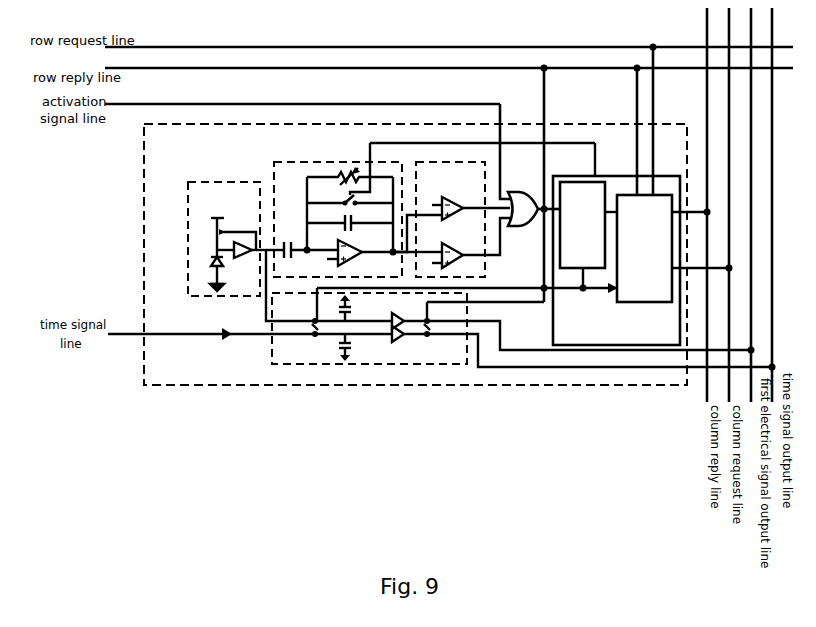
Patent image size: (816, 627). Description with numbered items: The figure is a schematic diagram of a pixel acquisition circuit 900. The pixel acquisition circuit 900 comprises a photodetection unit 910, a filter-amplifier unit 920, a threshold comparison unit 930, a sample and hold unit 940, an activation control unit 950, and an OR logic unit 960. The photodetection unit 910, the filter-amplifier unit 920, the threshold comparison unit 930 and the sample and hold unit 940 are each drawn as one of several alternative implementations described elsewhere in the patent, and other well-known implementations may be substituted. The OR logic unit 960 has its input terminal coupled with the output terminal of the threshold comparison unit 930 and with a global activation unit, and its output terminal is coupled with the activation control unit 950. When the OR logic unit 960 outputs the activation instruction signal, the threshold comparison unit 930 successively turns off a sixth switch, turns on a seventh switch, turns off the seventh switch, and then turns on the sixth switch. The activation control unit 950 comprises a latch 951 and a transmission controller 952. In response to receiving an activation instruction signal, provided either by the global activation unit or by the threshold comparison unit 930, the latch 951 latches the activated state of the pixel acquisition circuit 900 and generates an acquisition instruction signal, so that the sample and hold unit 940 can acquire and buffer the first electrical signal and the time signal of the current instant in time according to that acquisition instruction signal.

The pixel acquisition circuit 900 is at (579, 118).
The photodetection unit 910 is at (198, 176).
The filter-amplifier unit 920 is at (289, 160).
The threshold comparison unit 930 is at (425, 157).
The sample and hold unit 940 is at (521, 339).
The activation control unit 950 is at (525, 260).
The latch 951 is at (582, 225).
The transmission controller 952 is at (644, 248).
The OR logic unit 960 is at (527, 186).